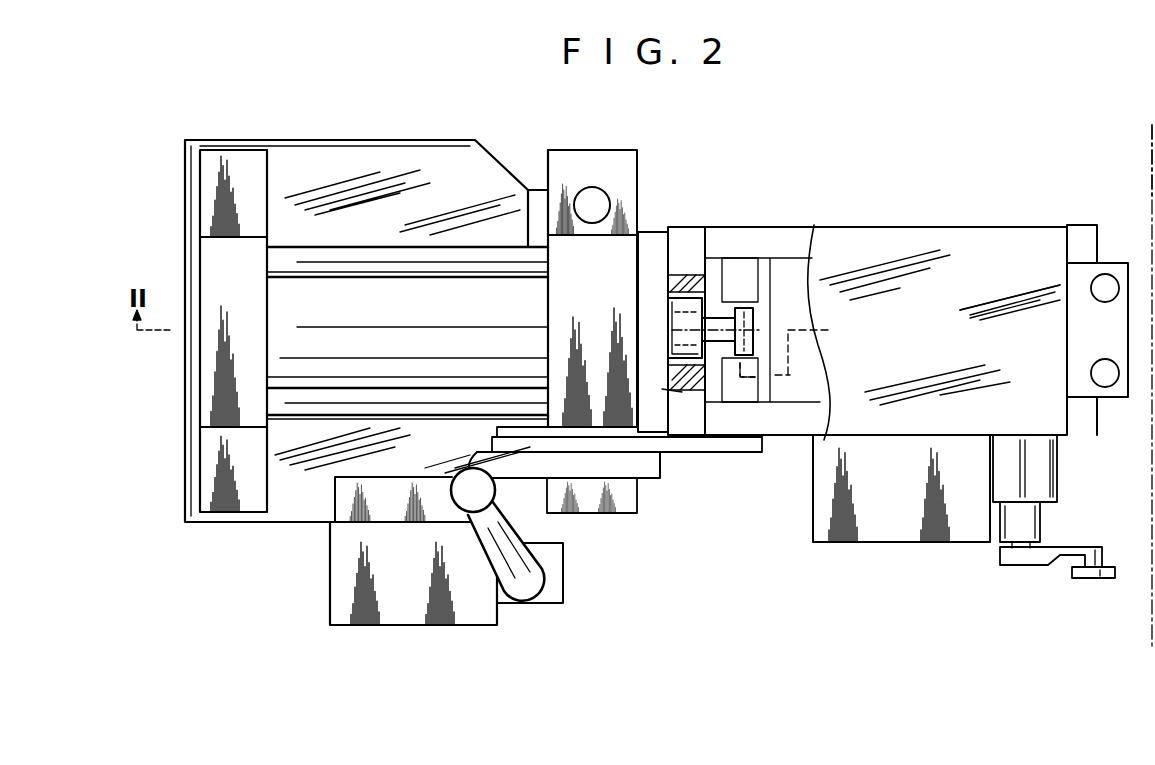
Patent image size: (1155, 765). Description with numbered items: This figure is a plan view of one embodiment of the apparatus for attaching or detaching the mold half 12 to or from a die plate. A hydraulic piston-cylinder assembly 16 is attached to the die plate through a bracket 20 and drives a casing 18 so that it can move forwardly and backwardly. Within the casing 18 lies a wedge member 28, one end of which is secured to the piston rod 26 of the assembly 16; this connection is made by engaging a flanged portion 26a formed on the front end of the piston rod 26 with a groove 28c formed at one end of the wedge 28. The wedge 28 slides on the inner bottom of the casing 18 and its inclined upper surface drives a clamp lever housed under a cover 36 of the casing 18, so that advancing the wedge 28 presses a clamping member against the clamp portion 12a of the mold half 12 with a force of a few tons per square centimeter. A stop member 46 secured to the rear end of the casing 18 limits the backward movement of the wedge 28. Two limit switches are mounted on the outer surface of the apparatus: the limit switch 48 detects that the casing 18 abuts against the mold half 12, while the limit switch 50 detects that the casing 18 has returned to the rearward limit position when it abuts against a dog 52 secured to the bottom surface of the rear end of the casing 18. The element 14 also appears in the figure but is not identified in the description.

The mold half 12 is at (1151, 603).
The clamp portion 12a is at (1150, 193).
The chuck body 14 is at (930, 227).
The hydraulic piston-cylinder assembly 16 is at (298, 299).
The casing 18 is at (793, 240).
The bracket 20 is at (445, 155).
The piston rod 26 is at (678, 310).
The flanged portion 26a is at (750, 322).
The wedge member 28 is at (815, 384).
The groove 28c is at (737, 362).
The cover 36 is at (1022, 254).
The stop member 46 is at (653, 245).
The limit switch 48 is at (890, 530).
The limit switch 50 is at (340, 600).
The dog 52 is at (656, 466).